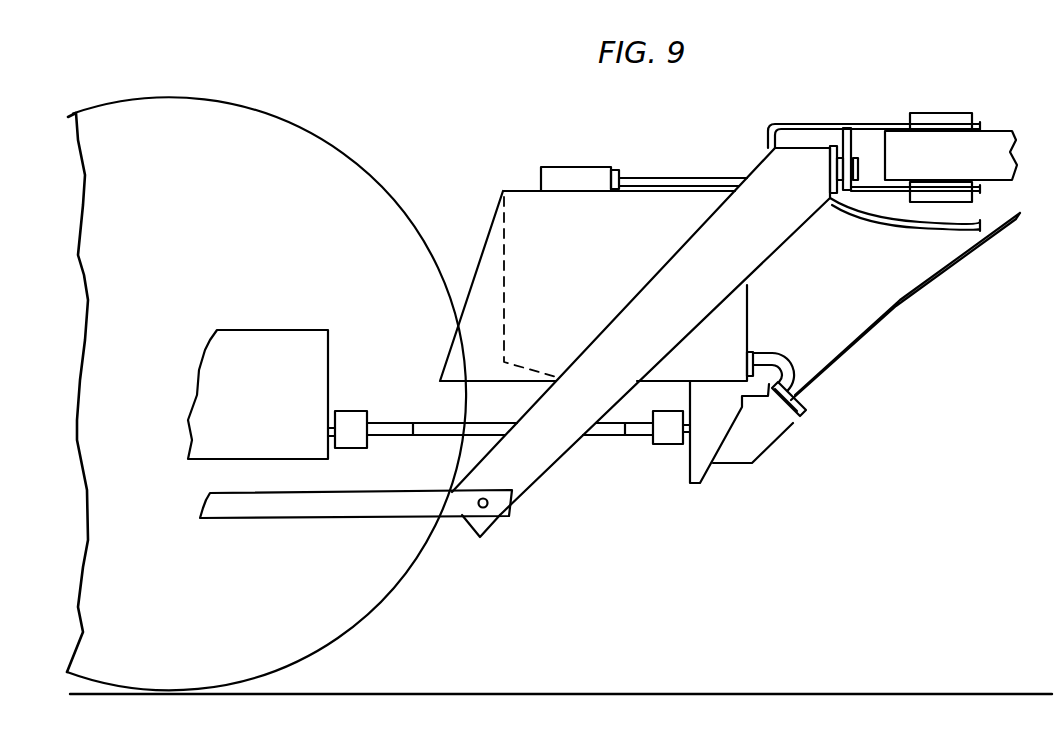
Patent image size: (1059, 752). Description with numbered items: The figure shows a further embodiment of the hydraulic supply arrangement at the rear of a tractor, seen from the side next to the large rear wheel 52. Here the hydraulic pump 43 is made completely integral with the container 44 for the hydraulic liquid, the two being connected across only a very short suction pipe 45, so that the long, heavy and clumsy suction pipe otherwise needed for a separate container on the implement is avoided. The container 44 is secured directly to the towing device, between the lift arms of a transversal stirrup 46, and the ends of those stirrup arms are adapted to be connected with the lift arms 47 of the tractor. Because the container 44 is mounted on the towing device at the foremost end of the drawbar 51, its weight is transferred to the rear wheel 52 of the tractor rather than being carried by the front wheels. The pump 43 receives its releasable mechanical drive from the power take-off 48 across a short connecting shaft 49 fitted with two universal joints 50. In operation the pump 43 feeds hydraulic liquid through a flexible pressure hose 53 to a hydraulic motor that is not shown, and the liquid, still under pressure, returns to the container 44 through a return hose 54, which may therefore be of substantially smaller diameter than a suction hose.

The hydraulic pump 43 is at (787, 423).
The container 44 is at (522, 207).
The suction pipe 45 is at (782, 362).
The transversal stirrup 46 is at (773, 232).
The lift arms 47 is at (505, 505).
The power take-off 48 is at (340, 428).
The connecting shaft 49 is at (395, 428).
The universal joints 50 is at (668, 436).
The drawbar 51 is at (985, 140).
The rear wheel 52 is at (347, 165).
The flexible pressure hose 53 is at (955, 258).
The return hose 54 is at (661, 178).